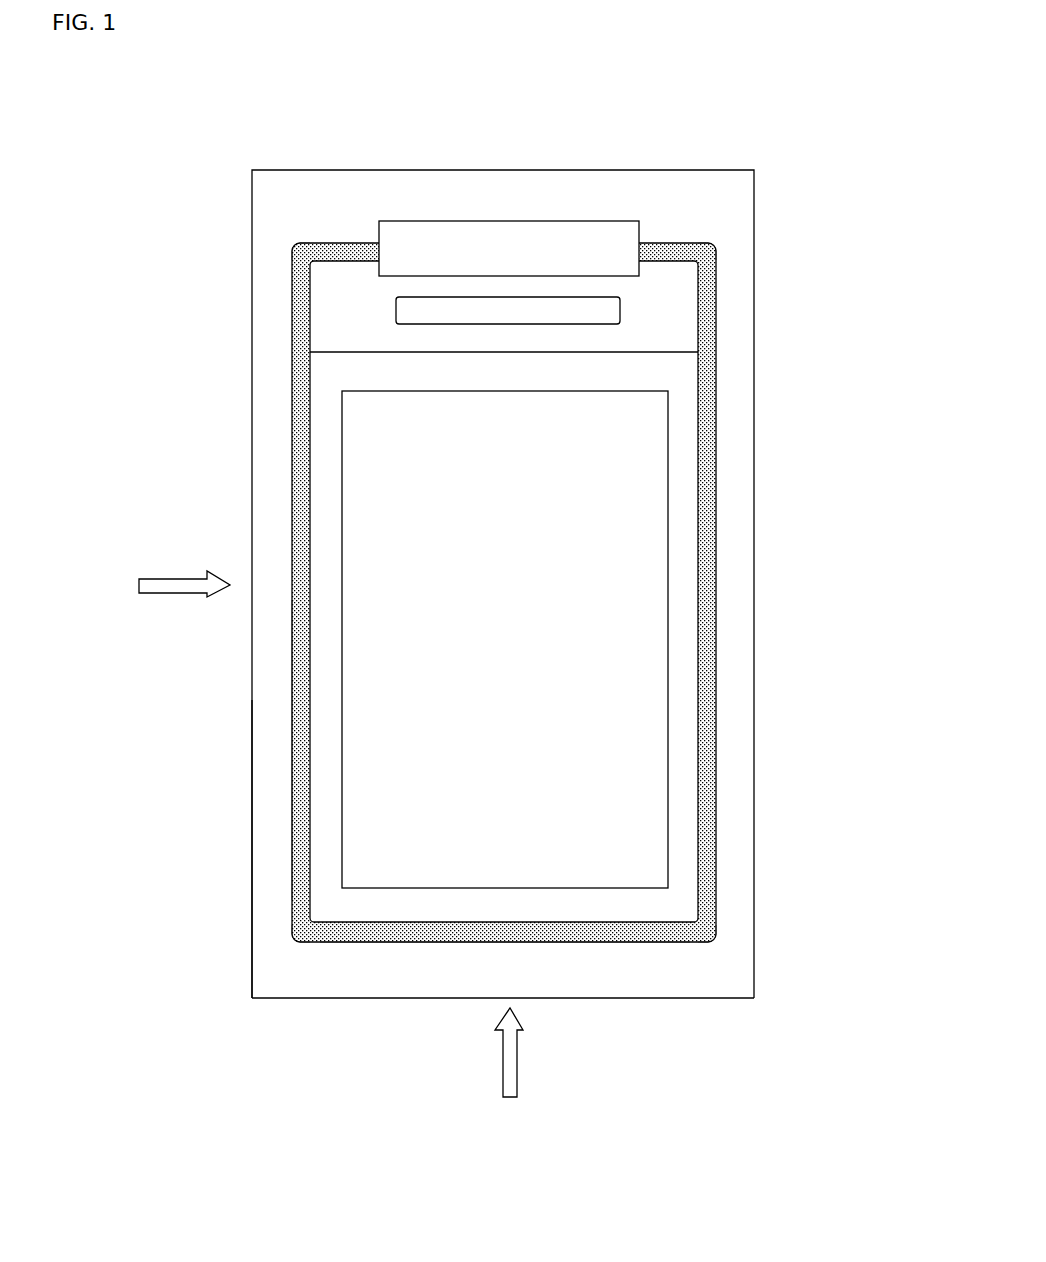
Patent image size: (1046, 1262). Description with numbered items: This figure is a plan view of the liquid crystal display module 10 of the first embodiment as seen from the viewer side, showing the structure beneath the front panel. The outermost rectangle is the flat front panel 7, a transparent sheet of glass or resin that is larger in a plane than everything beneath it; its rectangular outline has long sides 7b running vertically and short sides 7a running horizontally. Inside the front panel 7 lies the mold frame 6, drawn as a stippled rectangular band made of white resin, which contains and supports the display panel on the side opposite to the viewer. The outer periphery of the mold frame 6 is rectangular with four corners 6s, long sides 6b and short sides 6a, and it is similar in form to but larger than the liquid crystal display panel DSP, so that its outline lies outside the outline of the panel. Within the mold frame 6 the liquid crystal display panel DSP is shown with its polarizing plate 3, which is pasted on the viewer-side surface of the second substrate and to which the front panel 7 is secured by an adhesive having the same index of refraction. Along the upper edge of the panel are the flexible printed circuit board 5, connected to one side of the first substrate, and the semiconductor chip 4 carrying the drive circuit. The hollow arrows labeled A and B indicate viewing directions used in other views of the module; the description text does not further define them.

The liquid crystal display module 10 is at (735, 150).
The front panel 7 is at (268, 336).
The short sides of the front panel 7a is at (332, 1002).
The long sides of the front panel 7b is at (252, 775).
The mold frame 6 is at (292, 520).
The short sides of the mold frame 6a is at (420, 943).
The long sides of the mold frame 6b is at (292, 712).
The corners of the mold frame 6s is at (505, 543).
The flexible printed circuit board 5 is at (417, 240).
The semiconductor chip 4 is at (507, 315).
The polarizing plate 3 is at (356, 470).
The liquid crystal display panel DSP is at (688, 367).
The direction A is at (184, 571).
The direction B is at (500, 1052).